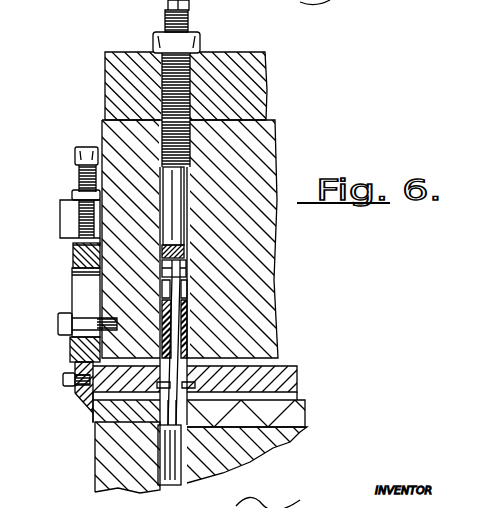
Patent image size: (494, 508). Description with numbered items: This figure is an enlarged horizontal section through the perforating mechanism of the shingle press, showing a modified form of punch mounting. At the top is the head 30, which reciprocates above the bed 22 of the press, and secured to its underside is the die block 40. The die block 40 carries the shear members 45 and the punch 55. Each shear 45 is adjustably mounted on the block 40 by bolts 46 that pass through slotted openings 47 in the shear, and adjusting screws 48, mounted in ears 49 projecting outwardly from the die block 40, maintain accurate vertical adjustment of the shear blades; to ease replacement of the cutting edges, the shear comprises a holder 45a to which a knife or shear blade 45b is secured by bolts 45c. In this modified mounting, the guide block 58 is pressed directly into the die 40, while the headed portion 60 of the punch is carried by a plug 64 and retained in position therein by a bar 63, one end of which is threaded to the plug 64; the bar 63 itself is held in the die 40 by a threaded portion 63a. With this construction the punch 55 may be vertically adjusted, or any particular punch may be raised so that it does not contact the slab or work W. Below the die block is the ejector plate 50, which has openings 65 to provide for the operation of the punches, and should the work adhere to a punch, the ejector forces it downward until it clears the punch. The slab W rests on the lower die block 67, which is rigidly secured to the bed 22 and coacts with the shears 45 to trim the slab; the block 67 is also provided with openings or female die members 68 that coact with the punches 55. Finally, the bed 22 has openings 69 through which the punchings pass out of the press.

The bed 22 is at (282, 445).
The head 30 is at (258, 98).
The die block 40 is at (268, 155).
The shear member 45 is at (75, 357).
The holder 45a is at (72, 394).
The shear blade 45b is at (98, 403).
The bolts 45c is at (62, 380).
The bolts 46 is at (68, 321).
The slotted openings 47 is at (87, 293).
The adjusting screws 48 is at (80, 172).
The ears 49 is at (66, 214).
The ejector plate 50 is at (297, 378).
The punch member 55 is at (157, 405).
The guide block 58 is at (170, 326).
The headed portion of the punch 60 is at (188, 258).
The bar 63 is at (192, 22).
The threaded portion 63a is at (192, 90).
The plug 64 is at (186, 272).
The openings 65 is at (190, 402).
The lower die block 67 is at (306, 415).
The female die members 68 is at (157, 418).
The openings 69 is at (165, 486).
The work W is at (283, 398).